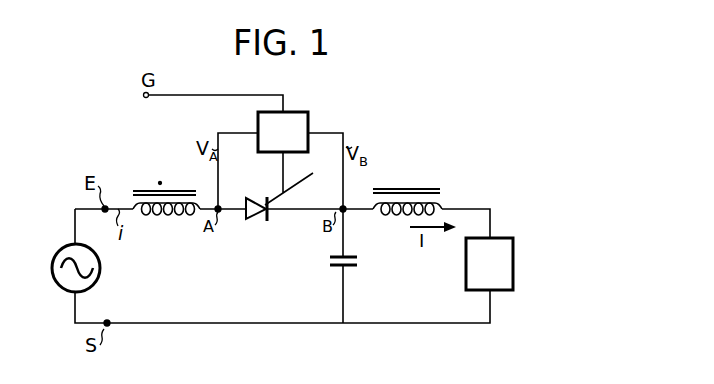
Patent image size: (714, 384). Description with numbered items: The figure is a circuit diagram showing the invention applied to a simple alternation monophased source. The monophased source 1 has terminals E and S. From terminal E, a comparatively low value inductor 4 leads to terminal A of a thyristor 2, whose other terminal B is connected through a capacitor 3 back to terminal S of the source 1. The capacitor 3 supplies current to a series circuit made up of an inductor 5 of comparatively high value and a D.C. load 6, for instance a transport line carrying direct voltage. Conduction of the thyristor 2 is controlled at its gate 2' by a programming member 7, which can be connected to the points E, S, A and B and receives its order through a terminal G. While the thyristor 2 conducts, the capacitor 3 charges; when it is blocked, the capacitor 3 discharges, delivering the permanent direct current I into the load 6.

The monophased source 1 is at (61, 258).
The thyristor 2 is at (260, 229).
The gate 2' is at (292, 179).
The capacitor 3 is at (358, 262).
The inductor 4 is at (175, 217).
The inductor 5 is at (438, 196).
The D.C. load 6 is at (498, 262).
The programming member 7 is at (300, 112).